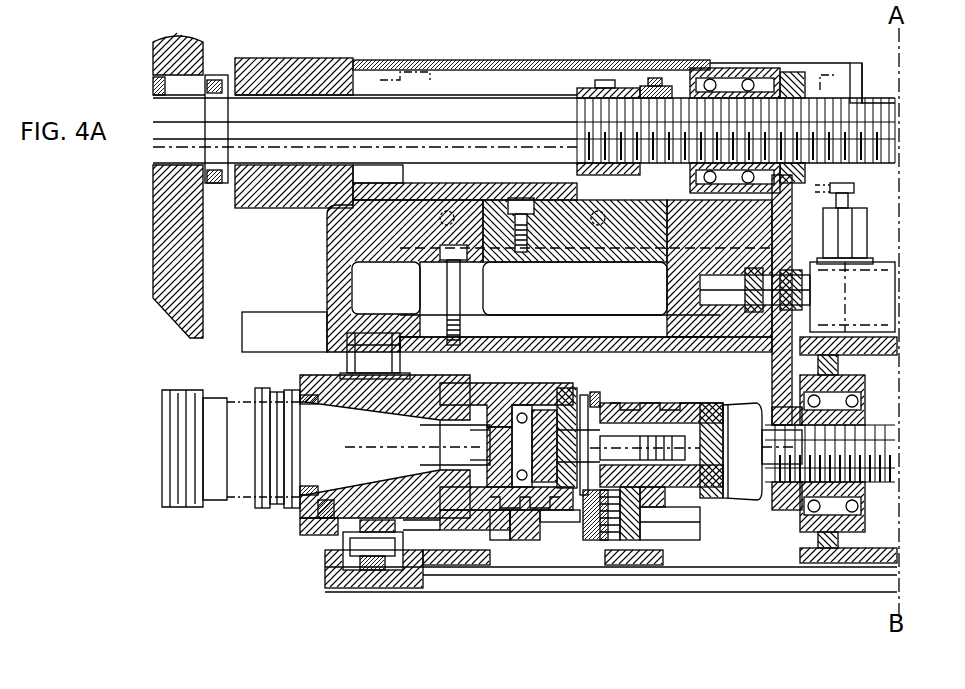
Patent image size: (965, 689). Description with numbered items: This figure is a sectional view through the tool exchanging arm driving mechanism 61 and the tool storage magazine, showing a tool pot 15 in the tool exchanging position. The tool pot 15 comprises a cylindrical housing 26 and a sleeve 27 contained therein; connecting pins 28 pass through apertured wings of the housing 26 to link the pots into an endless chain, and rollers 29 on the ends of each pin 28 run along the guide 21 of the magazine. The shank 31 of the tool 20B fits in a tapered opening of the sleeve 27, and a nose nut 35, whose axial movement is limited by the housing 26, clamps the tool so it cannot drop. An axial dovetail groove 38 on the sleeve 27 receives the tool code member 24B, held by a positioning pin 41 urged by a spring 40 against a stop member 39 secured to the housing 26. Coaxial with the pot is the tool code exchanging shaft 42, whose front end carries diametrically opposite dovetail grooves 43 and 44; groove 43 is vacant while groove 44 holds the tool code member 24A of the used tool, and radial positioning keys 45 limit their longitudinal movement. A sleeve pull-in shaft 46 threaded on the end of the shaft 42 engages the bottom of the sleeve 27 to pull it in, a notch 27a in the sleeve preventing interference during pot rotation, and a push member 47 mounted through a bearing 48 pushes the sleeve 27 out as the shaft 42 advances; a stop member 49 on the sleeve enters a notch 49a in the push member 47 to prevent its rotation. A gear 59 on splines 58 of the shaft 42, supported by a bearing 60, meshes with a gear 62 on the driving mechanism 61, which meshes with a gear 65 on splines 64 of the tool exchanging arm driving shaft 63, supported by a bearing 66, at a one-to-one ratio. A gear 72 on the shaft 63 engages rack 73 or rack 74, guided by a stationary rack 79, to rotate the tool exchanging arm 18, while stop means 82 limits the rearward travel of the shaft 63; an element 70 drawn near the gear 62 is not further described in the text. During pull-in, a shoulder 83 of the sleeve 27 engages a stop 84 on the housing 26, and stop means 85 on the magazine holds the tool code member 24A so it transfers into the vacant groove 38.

The tool pot 15 is at (390, 560).
The tool exchanging arm 18 is at (205, 48).
The tool 20B is at (258, 512).
The guide 21 is at (445, 575).
The tool code member 24A is at (688, 405).
The tool code member 24B is at (530, 540).
The cylindrical housing 26 is at (470, 385).
The sleeve 27 is at (425, 518).
The notch 27a is at (445, 380).
The connecting pin 28 is at (362, 560).
The roller 29 is at (345, 550).
The shank 31 is at (290, 505).
The nose nut 35 is at (305, 495).
The dovetail groove 38 is at (555, 522).
The stop member 39 is at (498, 540).
The spring 40 is at (520, 488).
The positioning pin 41 is at (540, 520).
The tool code exchanging shaft 42 is at (770, 500).
The dovetail groove 43 is at (690, 540).
The dovetail groove 44 is at (720, 540).
The radial positioning key 45 is at (735, 405).
The sleeve pull-in shaft 46 is at (652, 507).
The push member 47 is at (607, 540).
The bearing 48 is at (628, 540).
The stop member 49 is at (570, 392).
The notch 49a is at (584, 398).
The splines 58 is at (882, 563).
The gear 59 is at (800, 482).
The bearing 60 is at (860, 532).
The tool exchanging arm driving mechanism 61 is at (340, 245).
The gear 62 is at (788, 205).
The tool exchanging arm driving shaft 63 is at (455, 100).
The splines 64 is at (885, 103).
The gear 65 is at (800, 78).
The bearing 66 is at (740, 68).
The bolt 70 is at (856, 188).
The gear 72 is at (610, 86).
The rack 73 is at (608, 240).
The rack 74 is at (412, 258).
The stationary rack 79 is at (550, 250).
The stop means 82 is at (655, 84).
The shoulder 83 is at (324, 518).
The stop 84 is at (315, 535).
The stop means 85 is at (590, 540).